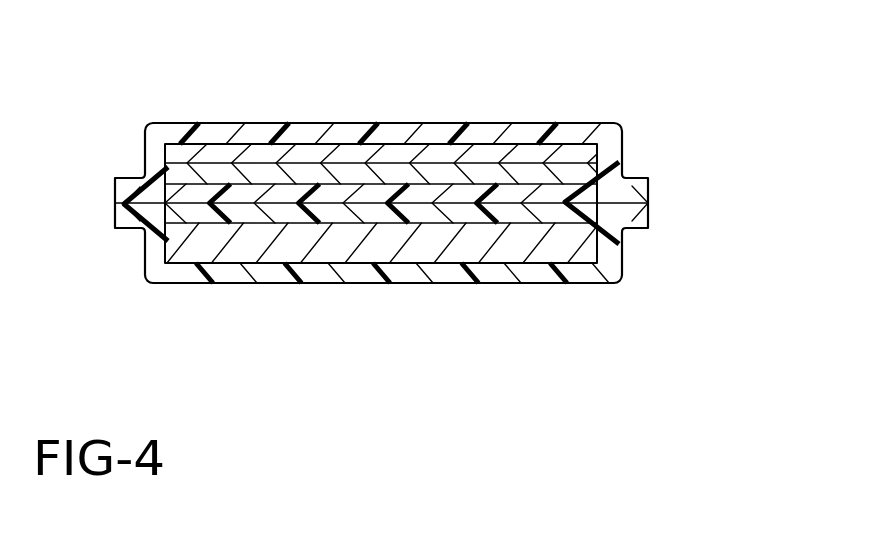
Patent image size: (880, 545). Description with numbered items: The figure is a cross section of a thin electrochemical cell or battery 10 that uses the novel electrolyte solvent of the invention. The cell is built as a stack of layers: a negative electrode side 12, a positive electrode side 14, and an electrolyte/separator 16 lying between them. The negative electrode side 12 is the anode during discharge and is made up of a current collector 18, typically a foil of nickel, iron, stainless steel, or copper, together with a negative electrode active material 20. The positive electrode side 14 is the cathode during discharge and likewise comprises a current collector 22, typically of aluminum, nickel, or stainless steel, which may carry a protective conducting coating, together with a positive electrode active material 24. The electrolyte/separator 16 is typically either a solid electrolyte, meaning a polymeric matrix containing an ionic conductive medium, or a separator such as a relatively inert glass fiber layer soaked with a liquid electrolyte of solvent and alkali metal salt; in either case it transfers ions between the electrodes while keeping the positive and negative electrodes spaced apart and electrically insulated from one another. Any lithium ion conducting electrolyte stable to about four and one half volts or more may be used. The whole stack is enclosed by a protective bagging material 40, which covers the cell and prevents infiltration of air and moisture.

The electrochemical cell or battery 10 is at (617, 100).
The negative electrode side 12 is at (345, 142).
The positive electrode side 14 is at (235, 264).
The electrolyte/separator 16 is at (555, 193).
The current collector 18 is at (433, 153).
The negative electrode active material 20 is at (182, 178).
The current collector 22 is at (185, 243).
The positive electrode active material 24 is at (553, 212).
The protective bagging material 40 is at (535, 272).